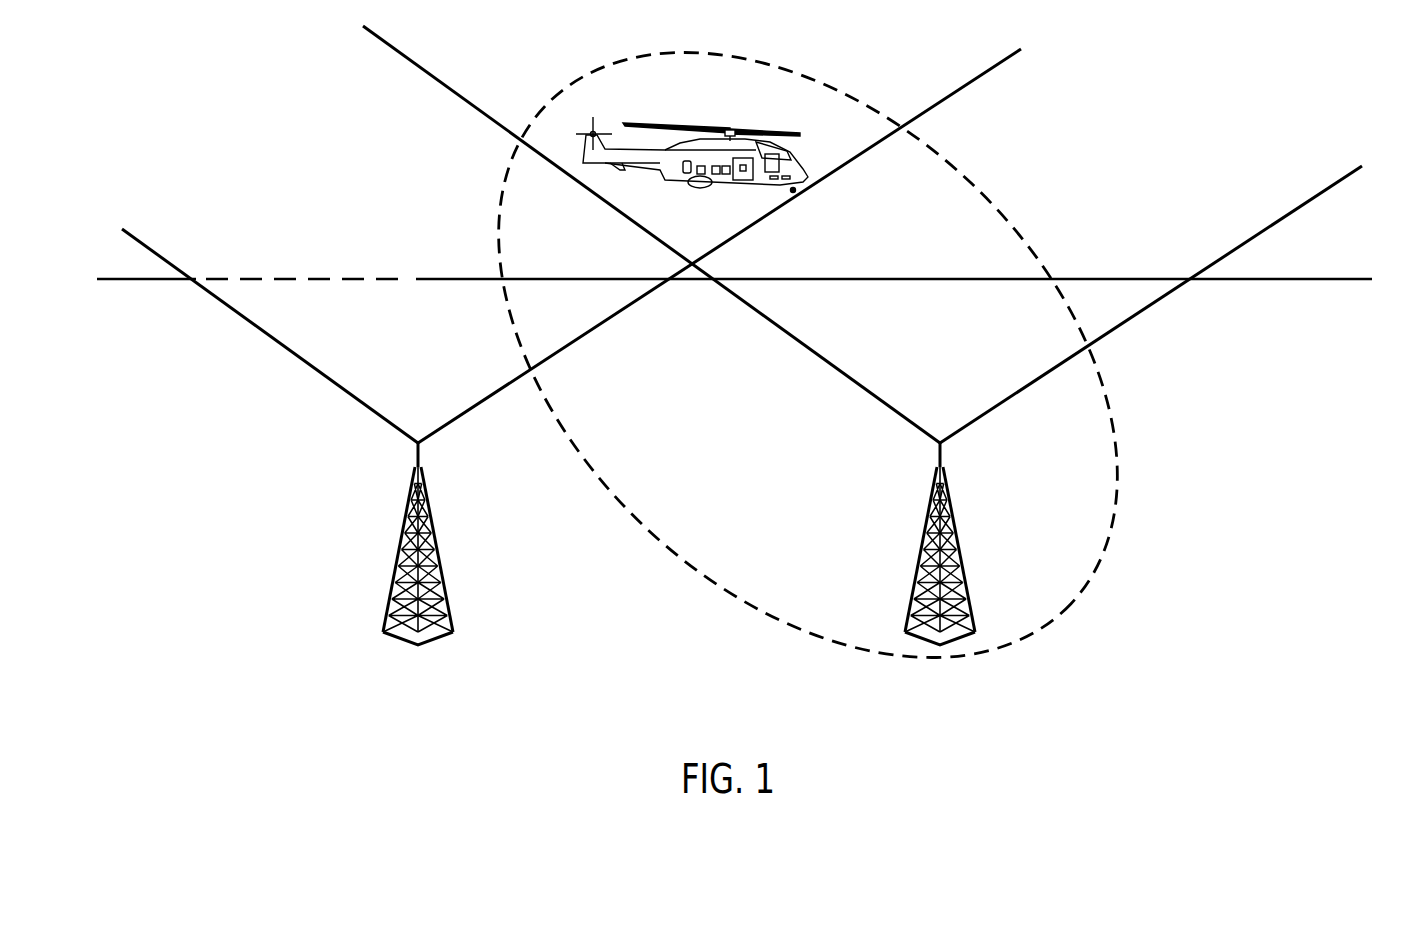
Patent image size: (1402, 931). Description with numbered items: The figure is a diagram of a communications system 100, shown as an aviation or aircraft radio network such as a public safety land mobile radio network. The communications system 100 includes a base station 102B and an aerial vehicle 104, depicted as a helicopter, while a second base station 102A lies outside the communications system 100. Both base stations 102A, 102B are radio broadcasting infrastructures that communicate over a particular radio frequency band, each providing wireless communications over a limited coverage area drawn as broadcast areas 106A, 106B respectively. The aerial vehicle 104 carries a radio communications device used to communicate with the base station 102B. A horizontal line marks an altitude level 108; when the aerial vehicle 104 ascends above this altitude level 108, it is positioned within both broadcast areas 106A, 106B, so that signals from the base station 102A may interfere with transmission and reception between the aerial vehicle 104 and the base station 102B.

The communications system 100 is at (497, 212).
The second base station 102A is at (396, 588).
The base station 102B is at (918, 570).
The aerial vehicle 104 is at (728, 129).
The broadcast area 106A is at (447, 394).
The broadcast area 106B is at (970, 394).
The altitude level 108 is at (133, 282).